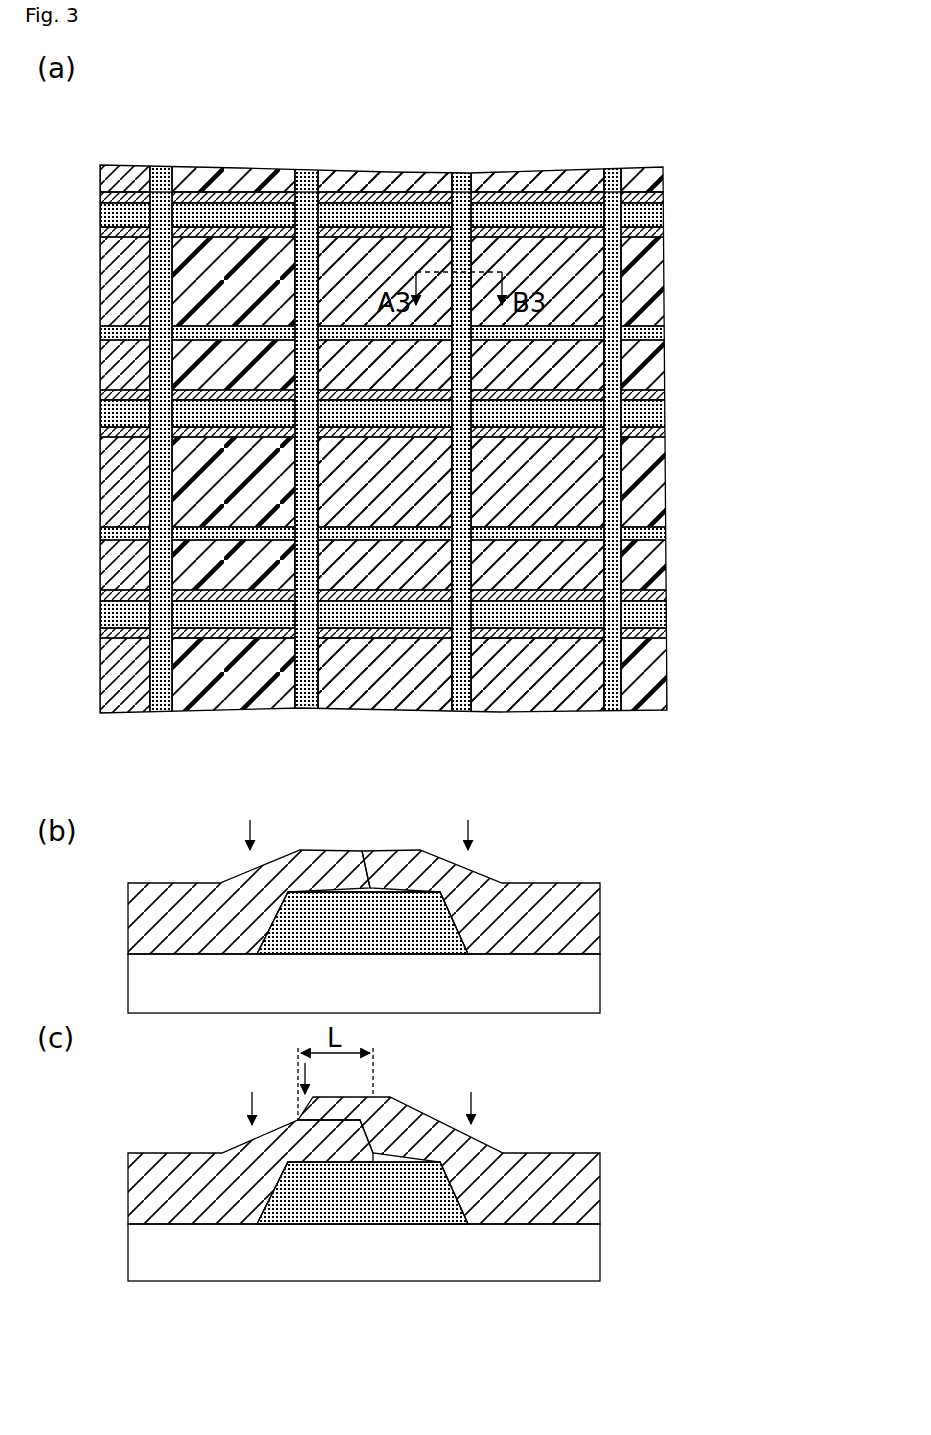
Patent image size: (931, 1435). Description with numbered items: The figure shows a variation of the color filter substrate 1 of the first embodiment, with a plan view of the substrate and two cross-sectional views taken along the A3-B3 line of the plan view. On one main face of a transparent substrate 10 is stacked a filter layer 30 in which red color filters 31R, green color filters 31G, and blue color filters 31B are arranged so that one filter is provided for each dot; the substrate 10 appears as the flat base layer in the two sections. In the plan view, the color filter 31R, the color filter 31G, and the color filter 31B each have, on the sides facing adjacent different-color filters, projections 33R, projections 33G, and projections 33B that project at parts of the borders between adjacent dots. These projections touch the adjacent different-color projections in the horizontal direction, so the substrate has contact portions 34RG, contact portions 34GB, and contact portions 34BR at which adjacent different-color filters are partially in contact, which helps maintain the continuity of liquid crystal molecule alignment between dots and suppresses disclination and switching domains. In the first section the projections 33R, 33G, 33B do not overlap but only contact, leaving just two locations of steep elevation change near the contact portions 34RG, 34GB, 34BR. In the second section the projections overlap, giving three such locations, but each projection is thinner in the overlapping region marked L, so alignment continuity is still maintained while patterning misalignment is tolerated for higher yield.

The color filter substrate 1 is at (615, 151).
The filter layer 30 is at (555, 103).
The red color filter 31R is at (226, 240).
The green color filter 31G is at (374, 245).
The blue color filter 31B is at (518, 240).
The projection 33R is at (290, 684).
The projection 33G is at (447, 684).
The projection 33B is at (600, 684).
The contact portion 34BR is at (161, 716).
The contact portion 34RG is at (309, 716).
The contact portion 34GB is at (462, 716).
The transparent substrate 10 is at (588, 988).